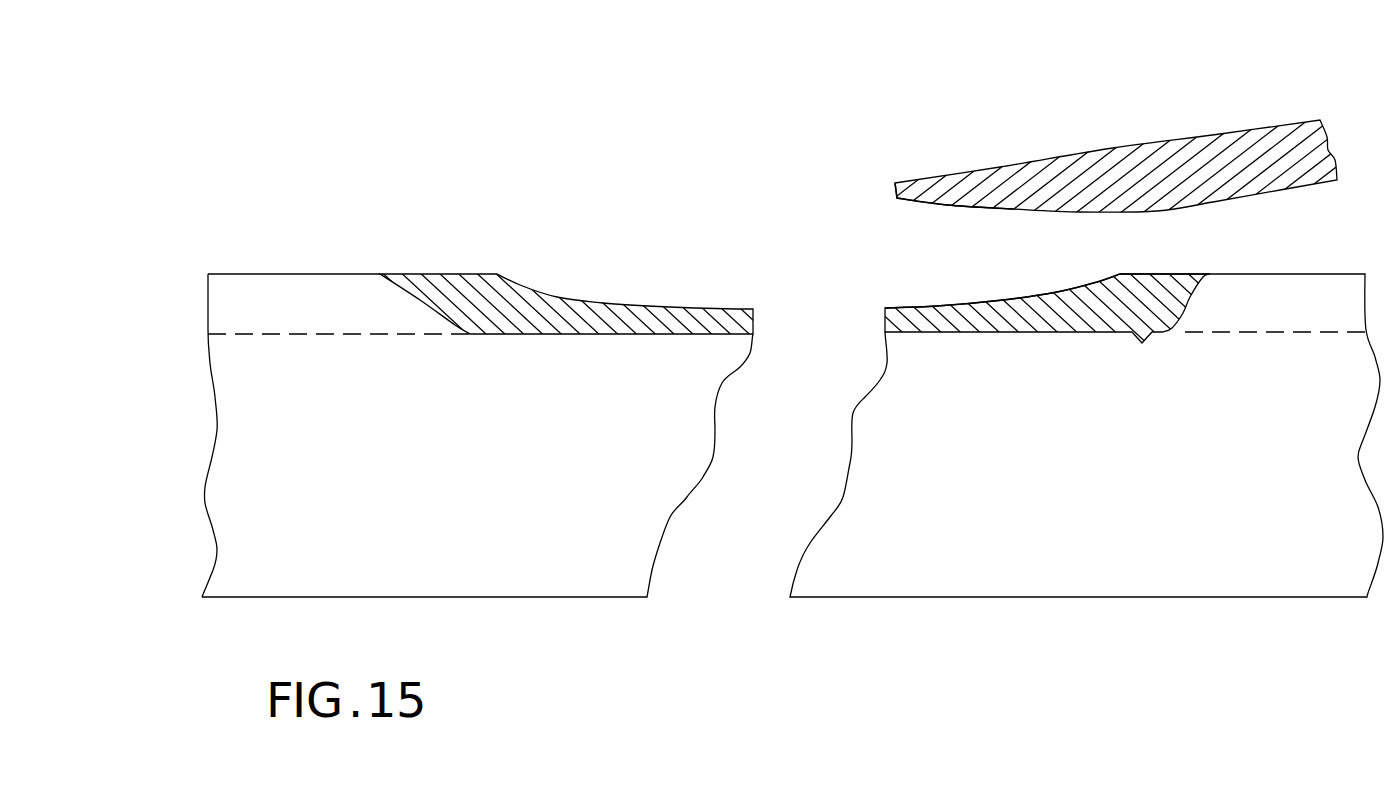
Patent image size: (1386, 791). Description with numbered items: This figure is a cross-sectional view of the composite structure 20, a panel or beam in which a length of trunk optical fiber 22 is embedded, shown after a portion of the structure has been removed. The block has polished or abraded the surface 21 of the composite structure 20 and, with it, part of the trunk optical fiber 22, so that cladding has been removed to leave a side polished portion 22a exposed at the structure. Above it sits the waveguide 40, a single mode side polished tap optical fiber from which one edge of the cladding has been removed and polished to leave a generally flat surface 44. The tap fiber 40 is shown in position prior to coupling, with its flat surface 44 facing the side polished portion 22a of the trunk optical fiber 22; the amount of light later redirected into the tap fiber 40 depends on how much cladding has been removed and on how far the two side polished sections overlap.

The composite structure 20 is at (267, 283).
The surface of the composite structure 21 is at (308, 273).
The optical fiber 22 is at (240, 298).
The side polished portion of trunk optical fiber 22a is at (1050, 292).
The waveguide 40 is at (1182, 165).
The flat surface 44 is at (965, 203).